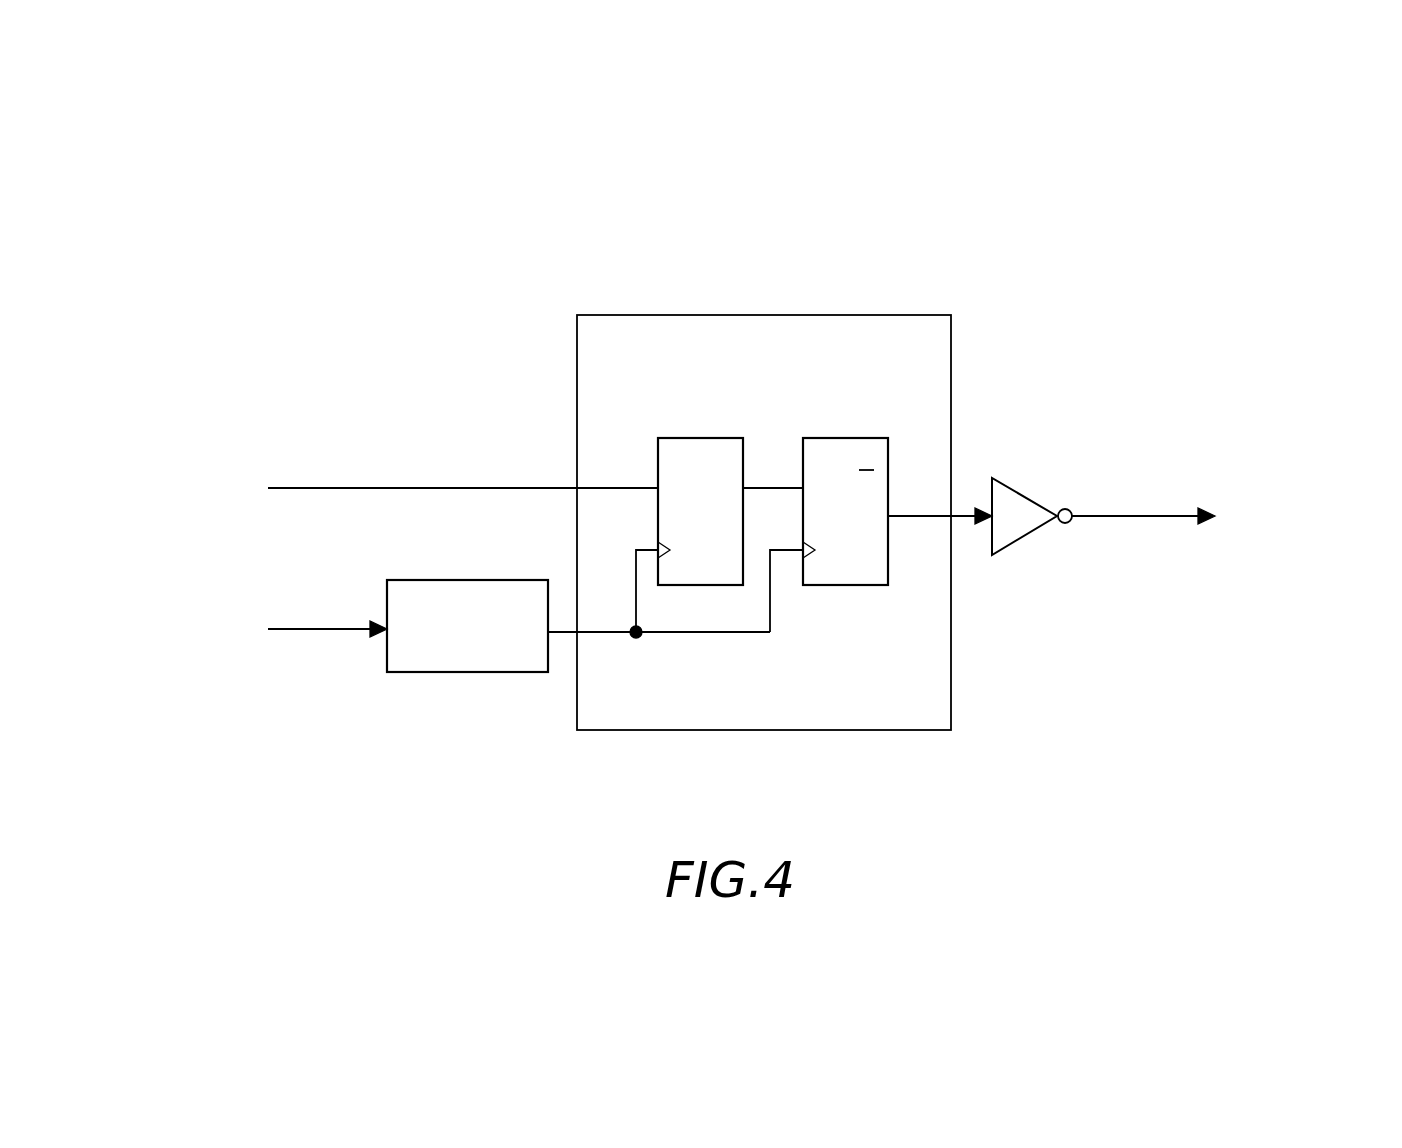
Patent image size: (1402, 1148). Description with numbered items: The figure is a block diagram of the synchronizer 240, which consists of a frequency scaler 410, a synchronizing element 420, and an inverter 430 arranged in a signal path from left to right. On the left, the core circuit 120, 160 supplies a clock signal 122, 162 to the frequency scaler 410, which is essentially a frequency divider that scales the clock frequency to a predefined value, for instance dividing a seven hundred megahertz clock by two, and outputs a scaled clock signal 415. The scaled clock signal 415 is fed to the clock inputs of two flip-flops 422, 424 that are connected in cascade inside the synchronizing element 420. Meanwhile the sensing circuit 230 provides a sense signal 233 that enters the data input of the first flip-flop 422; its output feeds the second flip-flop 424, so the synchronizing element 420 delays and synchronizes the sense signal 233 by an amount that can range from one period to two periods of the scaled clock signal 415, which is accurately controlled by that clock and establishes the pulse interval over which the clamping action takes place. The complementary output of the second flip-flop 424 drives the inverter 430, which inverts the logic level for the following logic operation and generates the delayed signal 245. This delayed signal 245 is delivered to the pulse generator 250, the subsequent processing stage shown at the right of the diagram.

The synchronizer 240 is at (1290, 193).
The sensing circuit 230 is at (189, 478).
The sense signal 233 is at (453, 464).
The core circuit 120 is at (185, 611).
The core circuit 160 is at (185, 611).
The clock signal 122 is at (327, 584).
The clock signal 162 is at (326, 645).
The frequency scaler 410 is at (513, 592).
The scaled clock signal 415 is at (740, 607).
The synchronizing element 420 is at (764, 522).
The flip-flop 422 is at (689, 456).
The flip-flop 424 is at (841, 456).
The inverter 430 is at (1012, 507).
The delayed signal 245 is at (1131, 533).
The pulse generator 250 is at (1306, 517).